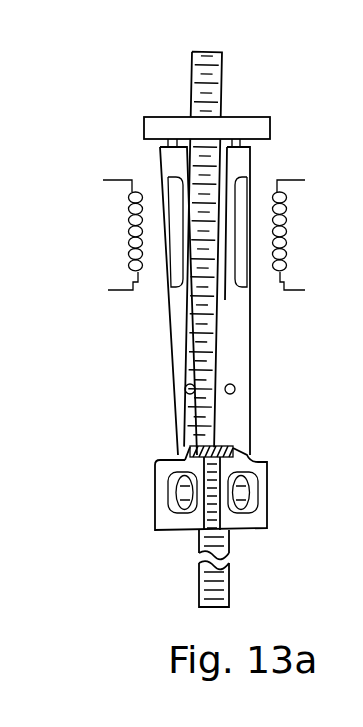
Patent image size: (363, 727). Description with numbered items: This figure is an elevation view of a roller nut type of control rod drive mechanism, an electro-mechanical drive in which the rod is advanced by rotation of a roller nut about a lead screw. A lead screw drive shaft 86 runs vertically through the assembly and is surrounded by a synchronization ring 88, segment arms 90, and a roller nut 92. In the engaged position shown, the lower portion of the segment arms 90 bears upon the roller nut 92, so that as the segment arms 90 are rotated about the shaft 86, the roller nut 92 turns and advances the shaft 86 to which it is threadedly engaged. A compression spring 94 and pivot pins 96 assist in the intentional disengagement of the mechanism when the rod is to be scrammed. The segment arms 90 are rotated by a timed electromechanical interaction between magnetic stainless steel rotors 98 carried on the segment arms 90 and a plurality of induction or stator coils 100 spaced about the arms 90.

The lead screw drive shaft 86 is at (222, 72).
The synchronization ring 88 is at (255, 117).
The segment arms 90 is at (178, 330).
The roller nut 92 is at (243, 494).
The compression spring 94 is at (190, 450).
The pivot pins 96 is at (234, 386).
The magnetic stainless steel rotors 98 is at (242, 193).
The induction or stator coils 100 is at (115, 225).